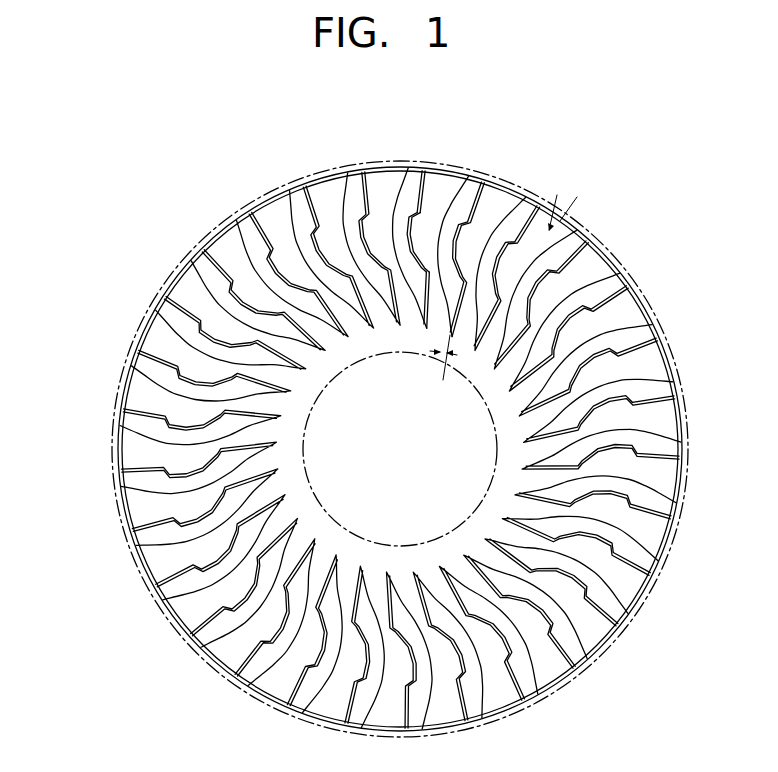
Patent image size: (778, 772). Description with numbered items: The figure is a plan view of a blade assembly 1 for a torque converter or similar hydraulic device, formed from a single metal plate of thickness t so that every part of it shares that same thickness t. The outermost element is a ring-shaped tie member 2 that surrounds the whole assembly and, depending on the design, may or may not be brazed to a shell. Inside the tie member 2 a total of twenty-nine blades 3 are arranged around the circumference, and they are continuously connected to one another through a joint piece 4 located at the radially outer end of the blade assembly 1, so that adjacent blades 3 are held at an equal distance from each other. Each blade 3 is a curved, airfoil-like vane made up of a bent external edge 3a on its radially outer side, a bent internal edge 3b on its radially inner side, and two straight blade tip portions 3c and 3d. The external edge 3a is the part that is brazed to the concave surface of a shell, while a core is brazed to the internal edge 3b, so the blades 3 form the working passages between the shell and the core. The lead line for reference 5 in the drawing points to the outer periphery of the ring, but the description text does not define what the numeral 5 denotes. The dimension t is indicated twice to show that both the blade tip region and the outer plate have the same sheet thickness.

The blade assembly 1 is at (648, 293).
The ring-shaped tie member 2 is at (614, 259).
The blade 3 is at (488, 247).
The bent external edge 3a is at (392, 228).
The bent internal edge 3b is at (438, 228).
The straight blade tip portion 3c is at (415, 200).
The straight blade tip portion 3d is at (428, 330).
The joint piece 4 is at (420, 177).
The outer periphery 5 is at (324, 170).
The thickness t is at (503, 288).